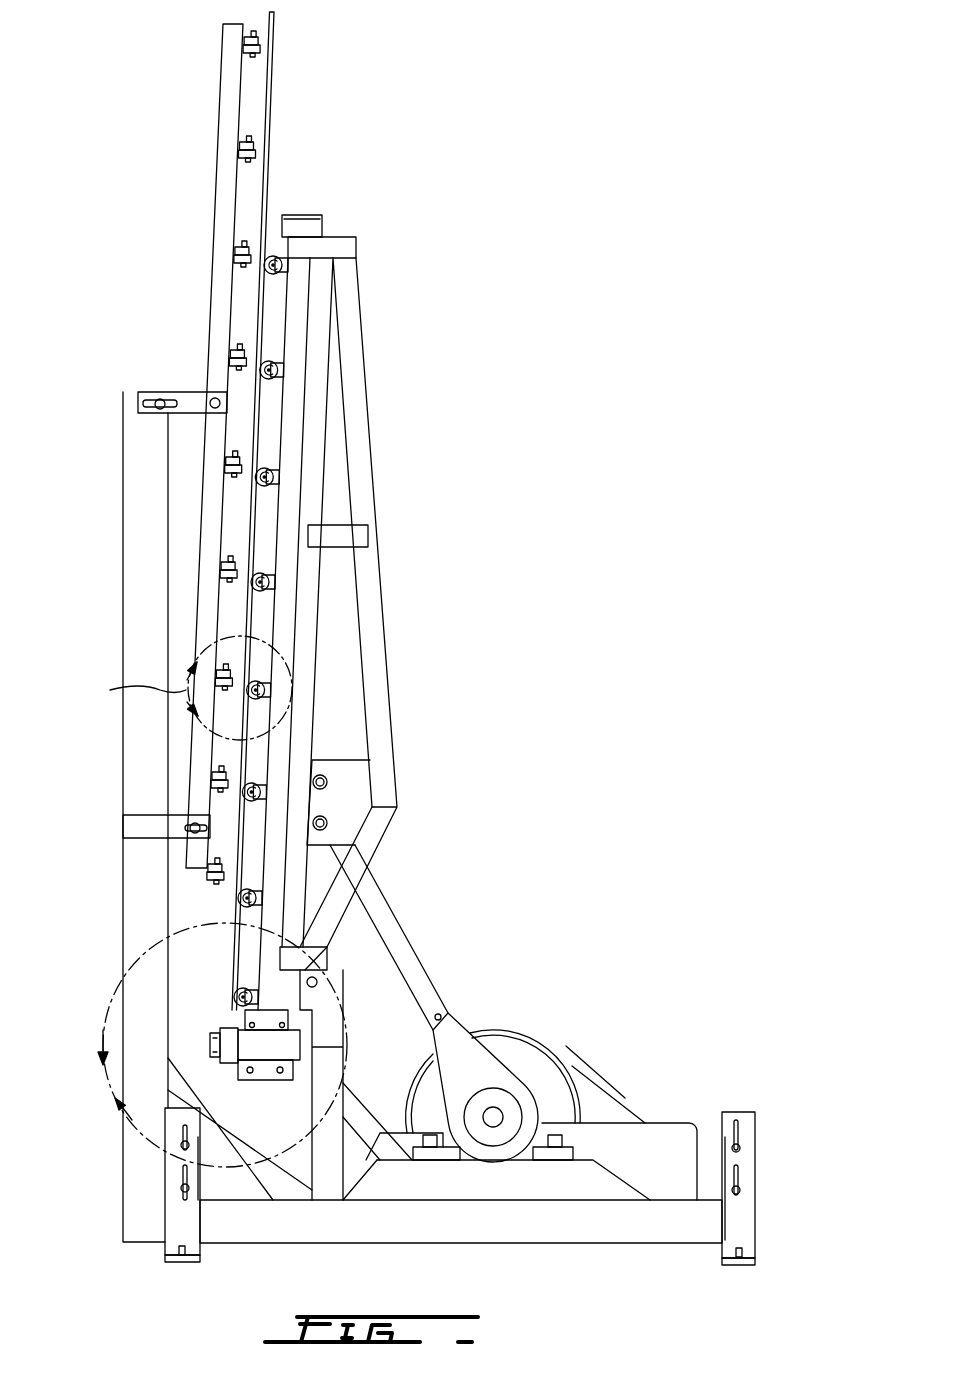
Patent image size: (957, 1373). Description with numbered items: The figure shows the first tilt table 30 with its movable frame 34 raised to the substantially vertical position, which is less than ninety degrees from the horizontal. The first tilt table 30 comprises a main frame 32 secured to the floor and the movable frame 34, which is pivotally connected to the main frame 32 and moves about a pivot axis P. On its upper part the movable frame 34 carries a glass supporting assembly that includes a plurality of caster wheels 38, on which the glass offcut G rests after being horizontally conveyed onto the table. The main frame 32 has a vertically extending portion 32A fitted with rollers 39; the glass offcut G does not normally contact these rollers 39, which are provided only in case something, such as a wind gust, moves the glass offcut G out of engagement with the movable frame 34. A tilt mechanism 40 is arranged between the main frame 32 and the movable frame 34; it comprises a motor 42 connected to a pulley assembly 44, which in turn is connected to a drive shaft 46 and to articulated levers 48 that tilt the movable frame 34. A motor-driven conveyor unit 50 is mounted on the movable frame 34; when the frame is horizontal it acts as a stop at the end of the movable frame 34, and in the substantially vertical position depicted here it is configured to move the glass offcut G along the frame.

The first tilt table 30 is at (665, 352).
The main frame 32 is at (145, 1022).
The vertically extending portion 32A is at (222, 214).
The movable frame 34 is at (343, 248).
The caster wheels 38 is at (270, 473).
The rollers 39 is at (262, 157).
The tilt mechanism 40 is at (620, 1002).
The motor 42 is at (645, 1135).
The pulley assembly 44 is at (533, 1067).
The drive shaft 46 is at (493, 1117).
The articulated levers 48 is at (410, 967).
The motor-driven conveyor unit 50 is at (220, 1062).
The glass offcut G is at (265, 203).
The pivot axis P is at (316, 980).